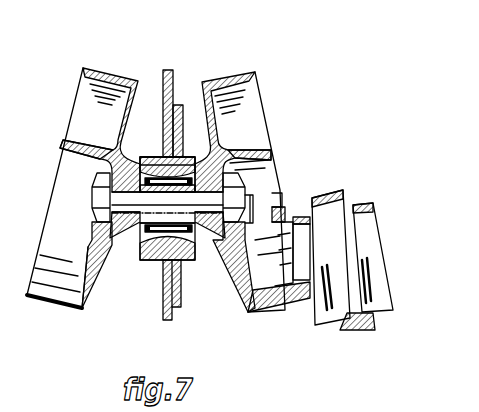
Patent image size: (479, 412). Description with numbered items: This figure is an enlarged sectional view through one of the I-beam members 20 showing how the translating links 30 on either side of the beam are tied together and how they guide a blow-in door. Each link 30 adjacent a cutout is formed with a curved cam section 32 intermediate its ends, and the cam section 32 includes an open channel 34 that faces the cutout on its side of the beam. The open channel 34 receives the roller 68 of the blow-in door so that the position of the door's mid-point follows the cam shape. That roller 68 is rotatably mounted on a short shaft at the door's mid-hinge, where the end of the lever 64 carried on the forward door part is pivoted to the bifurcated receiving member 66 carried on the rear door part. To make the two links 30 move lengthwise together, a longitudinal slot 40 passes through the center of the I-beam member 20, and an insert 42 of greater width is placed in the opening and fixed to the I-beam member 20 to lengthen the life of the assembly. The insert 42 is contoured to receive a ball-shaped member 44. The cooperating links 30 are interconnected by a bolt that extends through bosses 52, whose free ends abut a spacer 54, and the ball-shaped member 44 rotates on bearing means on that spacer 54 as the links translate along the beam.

The I-beam member 20 is at (168, 72).
The translating link 30 is at (86, 306).
The curved cam section 32 is at (95, 68).
The open channel 34 is at (78, 138).
The longitudinal slot 40 is at (163, 152).
The insert 42 is at (183, 106).
The ball-shaped member 44 is at (160, 262).
The boss 52 is at (142, 175).
The spacer 54 is at (183, 193).
The lever 64 is at (352, 314).
The bifurcated receiving member 66 is at (378, 278).
The roller 68 is at (283, 253).